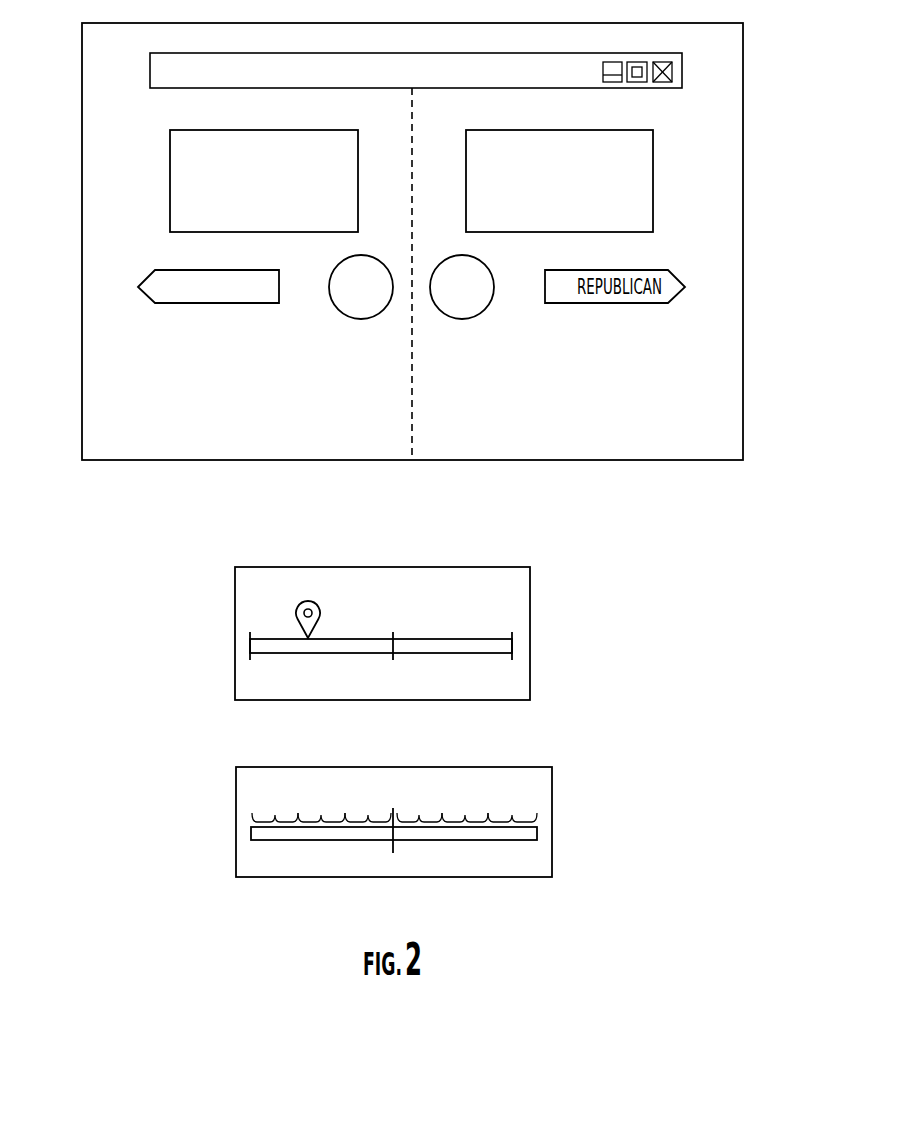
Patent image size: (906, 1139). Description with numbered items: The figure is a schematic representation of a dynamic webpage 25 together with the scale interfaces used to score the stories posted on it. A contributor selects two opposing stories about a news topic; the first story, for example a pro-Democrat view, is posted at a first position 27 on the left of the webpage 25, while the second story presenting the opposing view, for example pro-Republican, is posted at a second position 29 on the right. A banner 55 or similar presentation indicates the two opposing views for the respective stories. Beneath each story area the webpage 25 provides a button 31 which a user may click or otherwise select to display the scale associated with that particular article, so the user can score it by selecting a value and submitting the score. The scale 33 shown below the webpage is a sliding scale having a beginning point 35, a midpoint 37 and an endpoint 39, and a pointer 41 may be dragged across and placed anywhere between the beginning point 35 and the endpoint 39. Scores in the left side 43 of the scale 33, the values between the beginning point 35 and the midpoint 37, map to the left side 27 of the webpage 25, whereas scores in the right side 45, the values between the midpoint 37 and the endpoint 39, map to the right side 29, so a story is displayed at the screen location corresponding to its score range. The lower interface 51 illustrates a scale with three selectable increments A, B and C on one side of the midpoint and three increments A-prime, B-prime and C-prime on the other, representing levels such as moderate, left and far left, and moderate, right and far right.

The dynamic webpage 25 is at (768, 100).
The first position 27 is at (150, 181).
The second position 29 is at (710, 189).
The button 31 is at (352, 318).
The scale 33 is at (540, 565).
The beginning point 35 is at (250, 655).
The midpoint 37 is at (393, 663).
The endpoint 39 is at (512, 642).
The pointer 41 is at (311, 592).
The left side of scale 43 is at (351, 622).
The right side of scale 45 is at (458, 596).
The score category map 51 is at (583, 787).
The banner 55 is at (185, 305).